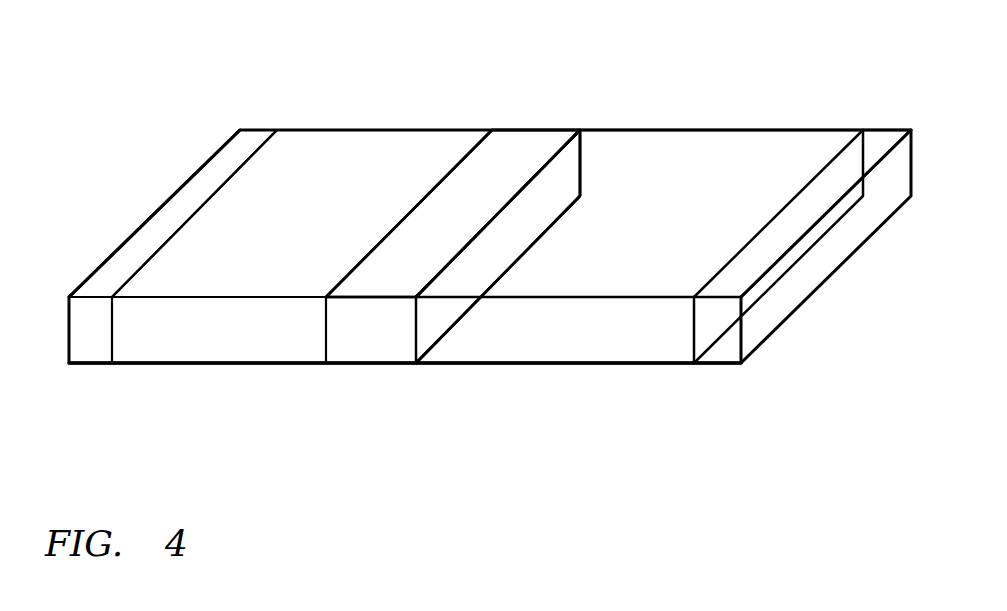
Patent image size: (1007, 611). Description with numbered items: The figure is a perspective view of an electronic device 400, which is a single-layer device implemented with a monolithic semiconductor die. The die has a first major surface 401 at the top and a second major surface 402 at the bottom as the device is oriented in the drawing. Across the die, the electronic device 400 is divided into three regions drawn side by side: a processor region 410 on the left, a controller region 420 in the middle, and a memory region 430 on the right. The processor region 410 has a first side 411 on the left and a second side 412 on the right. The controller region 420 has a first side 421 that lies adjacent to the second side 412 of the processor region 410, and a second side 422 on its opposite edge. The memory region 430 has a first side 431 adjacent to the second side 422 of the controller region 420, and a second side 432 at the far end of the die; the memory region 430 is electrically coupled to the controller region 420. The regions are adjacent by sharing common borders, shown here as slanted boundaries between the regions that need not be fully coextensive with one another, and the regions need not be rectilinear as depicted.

The electronic device 400 is at (150, 50).
The first major surface 401 is at (128, 257).
The second major surface 402 is at (88, 365).
The processor region 410 is at (345, 150).
The first side 411 is at (193, 213).
The second side 412 is at (463, 160).
The controller region 420 is at (525, 143).
The first side 421 is at (487, 148).
The second side 422 is at (578, 162).
The memory region 430 is at (685, 152).
The first side 431 is at (585, 160).
The second side 432 is at (812, 177).